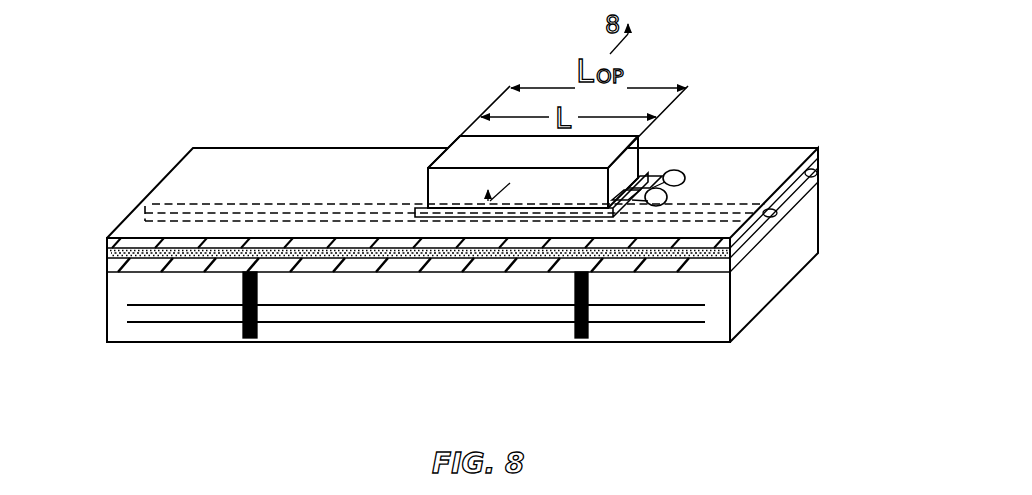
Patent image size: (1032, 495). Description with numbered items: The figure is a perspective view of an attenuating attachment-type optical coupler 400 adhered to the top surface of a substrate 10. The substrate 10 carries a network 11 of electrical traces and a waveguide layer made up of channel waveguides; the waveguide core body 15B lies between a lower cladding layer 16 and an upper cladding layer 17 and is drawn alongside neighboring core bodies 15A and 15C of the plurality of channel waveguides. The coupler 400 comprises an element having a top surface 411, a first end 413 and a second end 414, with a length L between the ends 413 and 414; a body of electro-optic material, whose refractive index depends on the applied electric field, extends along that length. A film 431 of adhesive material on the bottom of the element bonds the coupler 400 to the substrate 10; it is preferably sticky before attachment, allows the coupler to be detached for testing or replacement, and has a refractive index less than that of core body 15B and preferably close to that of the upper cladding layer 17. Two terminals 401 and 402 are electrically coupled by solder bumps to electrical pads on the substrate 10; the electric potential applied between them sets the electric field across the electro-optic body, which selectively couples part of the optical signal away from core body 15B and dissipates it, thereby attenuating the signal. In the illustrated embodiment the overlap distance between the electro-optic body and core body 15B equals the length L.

The substrate 10 is at (593, 343).
The network of electrical traces 11 is at (328, 323).
The first layer 15A is at (730, 249).
The core body 15B is at (778, 208).
The third layer 15C is at (817, 173).
The cladding layer 16 is at (106, 263).
The upper cladding layer 17 is at (107, 238).
The attenuating optical coupler 400 is at (574, 124).
The terminal 401 is at (680, 188).
The terminal 402 is at (683, 167).
The top surface 411 is at (480, 150).
The first end 413 is at (433, 163).
The second end 414 is at (641, 150).
The adhesive film 431 is at (423, 208).